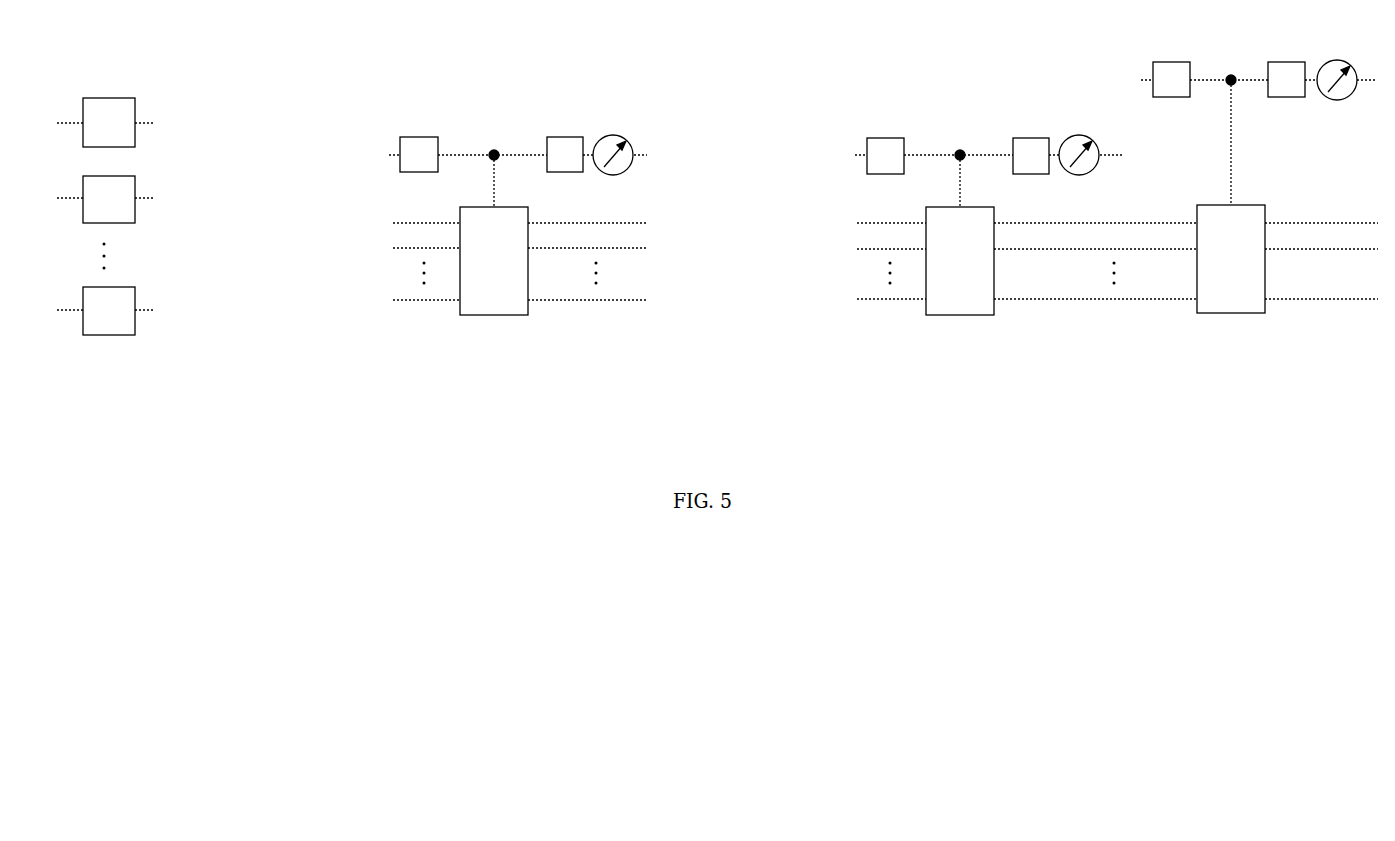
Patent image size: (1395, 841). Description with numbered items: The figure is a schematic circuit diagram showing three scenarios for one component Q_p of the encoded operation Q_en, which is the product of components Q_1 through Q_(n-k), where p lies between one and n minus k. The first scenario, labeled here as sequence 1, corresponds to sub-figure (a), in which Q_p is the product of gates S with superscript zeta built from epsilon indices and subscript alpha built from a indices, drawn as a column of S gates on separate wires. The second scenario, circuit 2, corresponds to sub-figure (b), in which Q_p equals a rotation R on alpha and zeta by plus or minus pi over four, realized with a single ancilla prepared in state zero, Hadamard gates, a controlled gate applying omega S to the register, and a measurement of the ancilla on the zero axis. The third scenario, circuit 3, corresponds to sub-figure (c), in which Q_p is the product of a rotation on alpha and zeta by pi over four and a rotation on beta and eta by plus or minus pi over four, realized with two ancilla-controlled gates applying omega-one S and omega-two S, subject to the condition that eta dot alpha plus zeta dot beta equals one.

The sequence of unitary gates S (sub-figure a) 1 is at (106, 271).
The single-ancilla quantum circuit with controlled gate (sub-figure b) 2 is at (500, 290).
The two-ancilla quantum circuit with two controlled gates (sub-figure c) 3 is at (1099, 251).